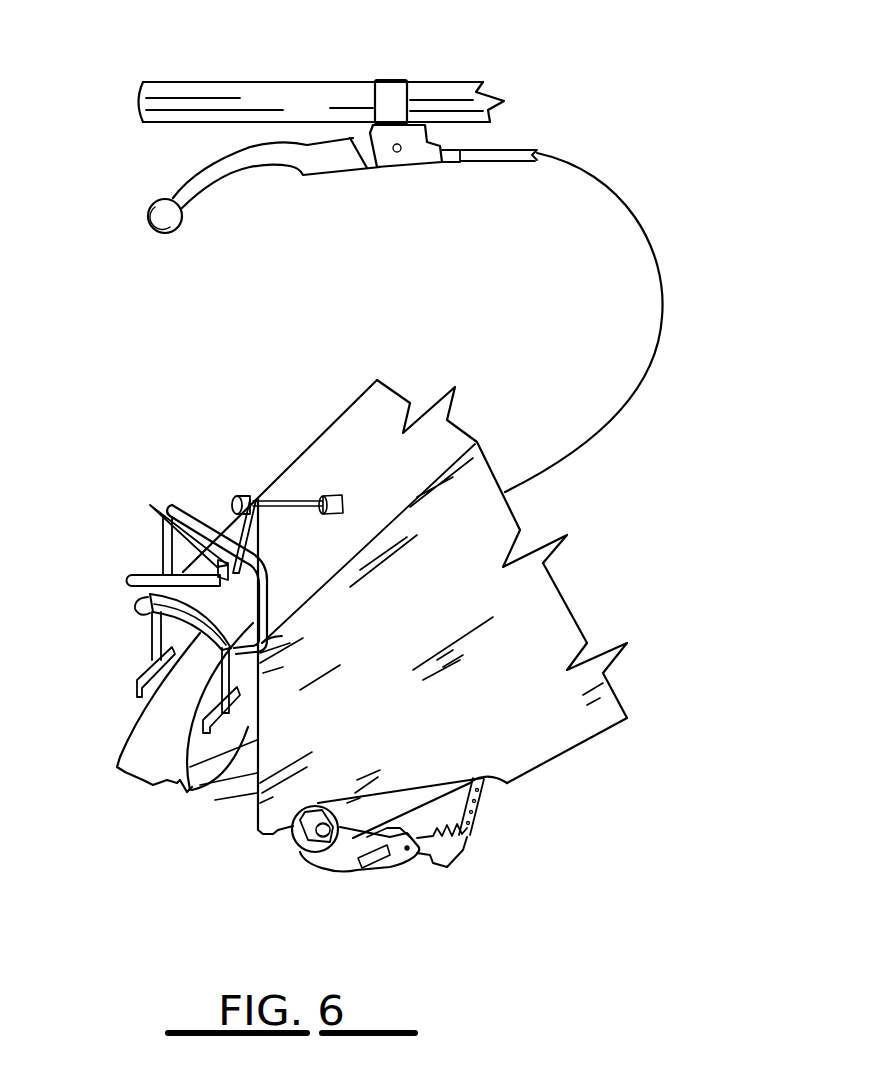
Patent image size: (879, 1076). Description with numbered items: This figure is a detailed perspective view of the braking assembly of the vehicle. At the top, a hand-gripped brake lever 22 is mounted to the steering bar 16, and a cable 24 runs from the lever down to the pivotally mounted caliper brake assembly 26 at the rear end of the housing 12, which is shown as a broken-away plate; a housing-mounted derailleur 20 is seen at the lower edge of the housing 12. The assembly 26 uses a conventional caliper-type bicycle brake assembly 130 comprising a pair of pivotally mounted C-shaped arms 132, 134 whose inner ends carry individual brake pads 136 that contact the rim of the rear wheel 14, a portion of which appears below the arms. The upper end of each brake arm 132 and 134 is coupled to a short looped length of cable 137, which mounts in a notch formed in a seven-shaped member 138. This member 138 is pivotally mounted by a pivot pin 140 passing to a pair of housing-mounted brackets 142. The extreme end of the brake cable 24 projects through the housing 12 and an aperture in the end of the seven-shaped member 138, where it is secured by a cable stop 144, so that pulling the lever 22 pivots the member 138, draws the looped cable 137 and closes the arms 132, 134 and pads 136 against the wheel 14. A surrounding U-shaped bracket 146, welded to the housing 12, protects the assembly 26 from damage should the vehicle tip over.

The housing 12 is at (439, 585).
The rear wheel 14 is at (157, 758).
The steering bar 16 is at (205, 90).
The derailleur 20 is at (363, 877).
The brake lever 22 is at (237, 168).
The cable 24 is at (657, 263).
The caliper brake assembly 26 is at (140, 537).
The caliper-type bicycle brake assembly 130 is at (277, 637).
The C-shaped arm 132 is at (148, 650).
The C-shaped arm 134 is at (222, 670).
The brake pads 136 is at (210, 722).
The looped length of cable 137 is at (134, 585).
The 7-shaped member 138 is at (247, 535).
The pivot pin 140 is at (252, 583).
The brackets 142 is at (150, 505).
The cable stop 144 is at (232, 496).
The U-shaped bracket 146 is at (177, 507).